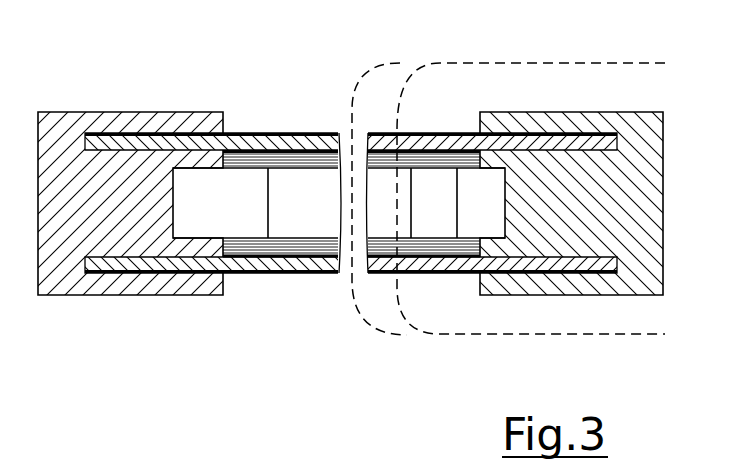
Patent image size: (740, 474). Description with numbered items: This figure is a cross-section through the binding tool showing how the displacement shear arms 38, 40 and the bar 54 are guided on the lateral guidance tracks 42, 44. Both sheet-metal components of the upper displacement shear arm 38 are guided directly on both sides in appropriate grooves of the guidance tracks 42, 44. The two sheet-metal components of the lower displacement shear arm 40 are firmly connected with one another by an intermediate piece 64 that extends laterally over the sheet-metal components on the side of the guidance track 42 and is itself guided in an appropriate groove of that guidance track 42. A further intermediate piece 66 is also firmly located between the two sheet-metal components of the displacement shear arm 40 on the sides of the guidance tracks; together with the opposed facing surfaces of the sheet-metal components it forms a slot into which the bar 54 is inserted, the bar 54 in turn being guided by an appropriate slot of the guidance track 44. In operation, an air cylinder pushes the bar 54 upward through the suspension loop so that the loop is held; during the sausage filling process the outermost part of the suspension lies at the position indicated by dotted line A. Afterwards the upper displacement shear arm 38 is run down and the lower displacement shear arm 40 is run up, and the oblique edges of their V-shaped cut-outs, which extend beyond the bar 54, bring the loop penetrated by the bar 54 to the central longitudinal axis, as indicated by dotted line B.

The upper displacement shear arm 38 is at (308, 140).
The lower displacement shear arm 40 is at (283, 238).
The lateral guidance track 42 is at (78, 113).
The lateral guidance track 44 is at (645, 140).
The bar 54 is at (468, 190).
The intermediate piece 64 is at (242, 182).
The intermediate piece 66 is at (418, 180).
The dotted line A is at (435, 330).
The dotted line B is at (372, 322).